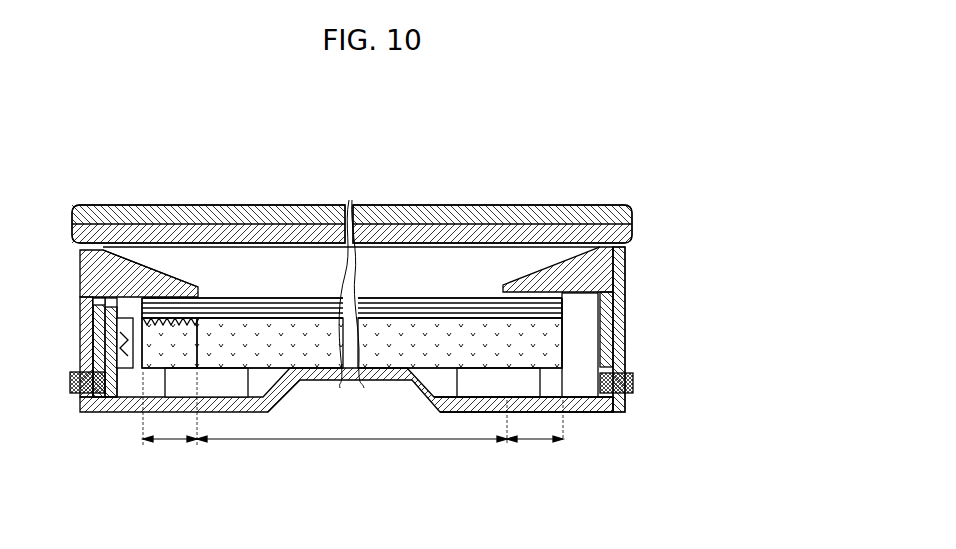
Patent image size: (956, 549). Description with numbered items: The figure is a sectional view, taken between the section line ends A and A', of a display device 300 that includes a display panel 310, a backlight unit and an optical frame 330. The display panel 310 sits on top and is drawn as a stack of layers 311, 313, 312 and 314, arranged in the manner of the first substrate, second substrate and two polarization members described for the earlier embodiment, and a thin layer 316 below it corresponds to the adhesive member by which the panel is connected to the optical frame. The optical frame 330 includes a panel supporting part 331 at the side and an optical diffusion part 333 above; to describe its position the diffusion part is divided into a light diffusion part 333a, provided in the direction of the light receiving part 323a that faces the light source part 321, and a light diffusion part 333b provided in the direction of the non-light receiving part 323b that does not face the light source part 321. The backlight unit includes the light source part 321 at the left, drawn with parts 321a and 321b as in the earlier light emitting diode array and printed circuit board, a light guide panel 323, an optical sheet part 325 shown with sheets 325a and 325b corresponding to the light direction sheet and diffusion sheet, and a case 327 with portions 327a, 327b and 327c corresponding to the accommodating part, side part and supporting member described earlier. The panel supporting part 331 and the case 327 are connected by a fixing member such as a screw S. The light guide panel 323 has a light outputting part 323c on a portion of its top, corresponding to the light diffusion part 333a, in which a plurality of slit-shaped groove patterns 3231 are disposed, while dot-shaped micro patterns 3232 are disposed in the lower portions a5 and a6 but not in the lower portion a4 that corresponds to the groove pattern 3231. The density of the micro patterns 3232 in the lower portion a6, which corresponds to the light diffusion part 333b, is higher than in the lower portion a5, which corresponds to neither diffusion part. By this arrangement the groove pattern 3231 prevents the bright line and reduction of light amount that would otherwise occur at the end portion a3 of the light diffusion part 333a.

The display device 300 is at (88, 133).
The display panel 310 is at (442, 150).
The first layer of display panel 311 is at (442, 303).
The second layer of display panel 312 is at (510, 313).
The third layer of display panel 313 is at (477, 308).
The fourth layer of display panel 314 is at (545, 318).
The adhesive layer 316 is at (625, 244).
The light source part 321 is at (68, 485).
The first support portion 321a is at (112, 380).
The second support portion 321b is at (100, 380).
The light guide panel 323 is at (345, 492).
The light receiving part 323a is at (136, 350).
The non-light receiving part 323b is at (553, 353).
The light outputting part 323c is at (252, 322).
The groove pattern 3231 is at (92, 306).
The micro pattern 3232 is at (468, 372).
The optical sheet part 325 is at (418, 136).
The first protective film portion 325a is at (372, 298).
The second protective film portion 325b is at (403, 297).
The case 327 is at (653, 512).
The first bottom support portion 327a is at (572, 398).
The second bottom support portion 327b is at (597, 400).
The third bottom support portion 327c is at (560, 322).
The optical frame 330 is at (683, 273).
The panel supporting part 331 is at (618, 322).
The optical diffusion part 333 is at (622, 270).
The light diffusion part 333a is at (160, 275).
The light diffusion part 333b is at (568, 255).
The screw S is at (634, 383).
The section line end A is at (68, 430).
The section line end A' is at (639, 426).
The end portion a3 is at (200, 288).
The lower portion a4 is at (170, 418).
The lower portion a5 is at (352, 449).
The lower portion a6 is at (535, 431).